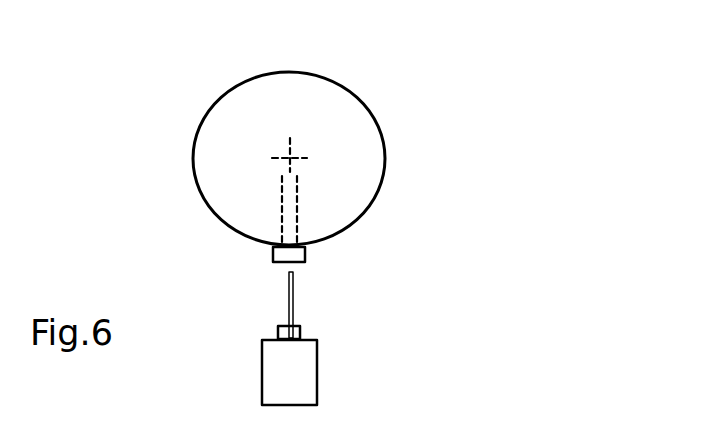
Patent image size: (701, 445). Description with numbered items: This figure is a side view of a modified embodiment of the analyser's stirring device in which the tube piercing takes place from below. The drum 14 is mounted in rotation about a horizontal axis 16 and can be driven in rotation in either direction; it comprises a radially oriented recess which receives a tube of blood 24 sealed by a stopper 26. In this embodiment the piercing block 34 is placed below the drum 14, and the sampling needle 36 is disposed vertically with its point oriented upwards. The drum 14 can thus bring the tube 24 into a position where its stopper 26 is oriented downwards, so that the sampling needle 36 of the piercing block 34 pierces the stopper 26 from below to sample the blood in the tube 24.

The drum 14 is at (340, 82).
The horizontal axis 16 is at (289, 157).
The tube of blood 24 is at (277, 206).
The stopper 26 is at (305, 255).
The piercing block 34 is at (317, 378).
The sampling needle 36 is at (288, 297).